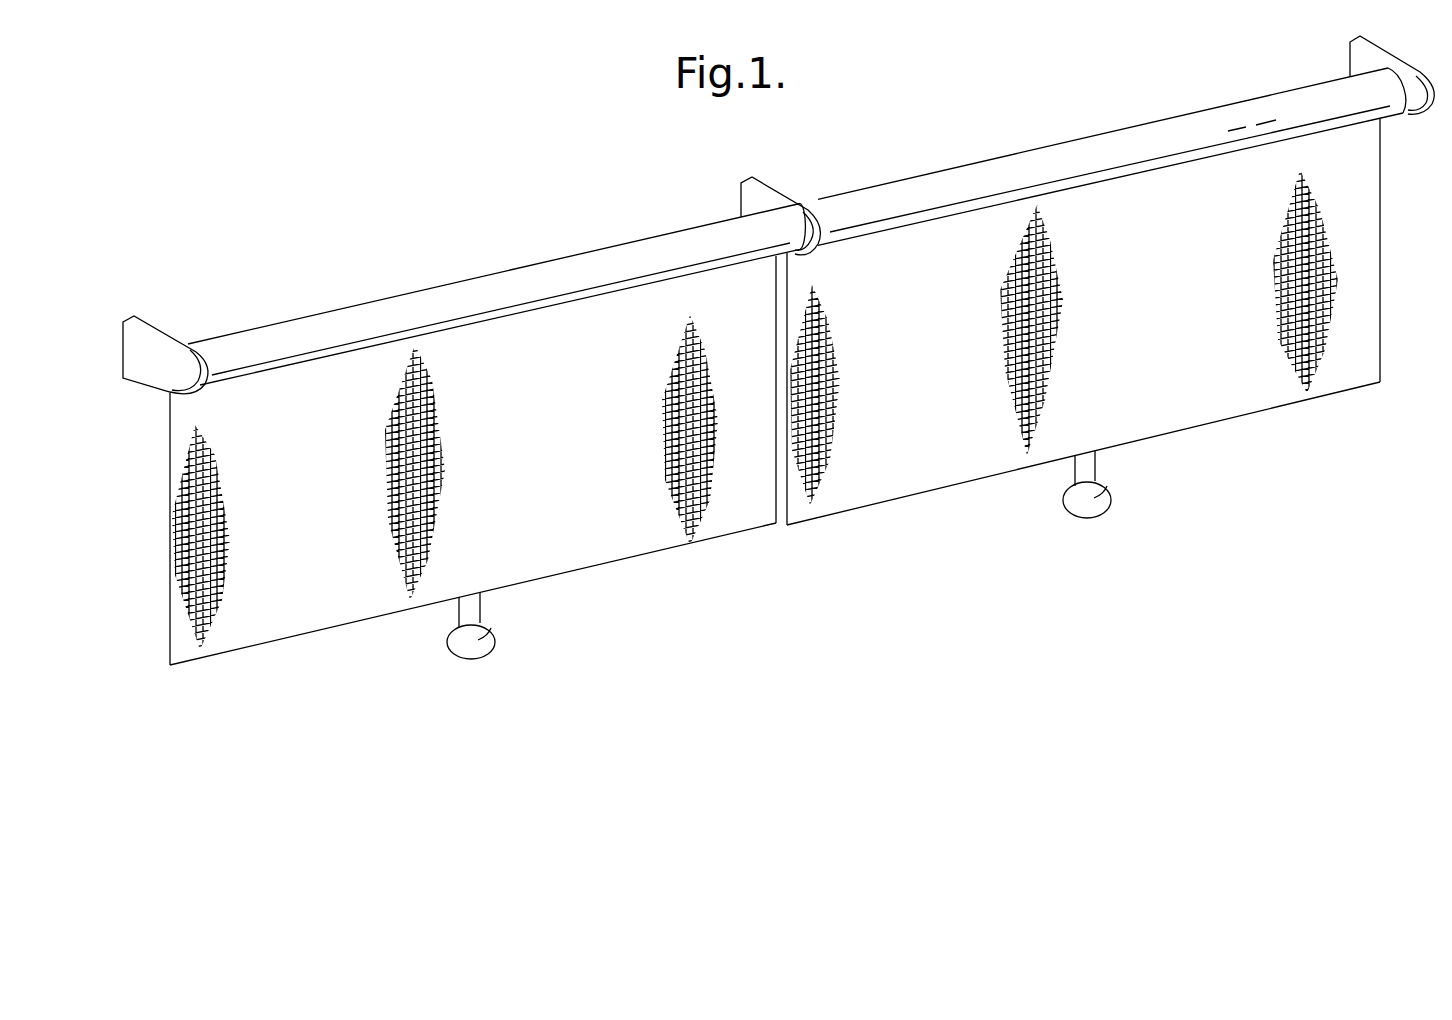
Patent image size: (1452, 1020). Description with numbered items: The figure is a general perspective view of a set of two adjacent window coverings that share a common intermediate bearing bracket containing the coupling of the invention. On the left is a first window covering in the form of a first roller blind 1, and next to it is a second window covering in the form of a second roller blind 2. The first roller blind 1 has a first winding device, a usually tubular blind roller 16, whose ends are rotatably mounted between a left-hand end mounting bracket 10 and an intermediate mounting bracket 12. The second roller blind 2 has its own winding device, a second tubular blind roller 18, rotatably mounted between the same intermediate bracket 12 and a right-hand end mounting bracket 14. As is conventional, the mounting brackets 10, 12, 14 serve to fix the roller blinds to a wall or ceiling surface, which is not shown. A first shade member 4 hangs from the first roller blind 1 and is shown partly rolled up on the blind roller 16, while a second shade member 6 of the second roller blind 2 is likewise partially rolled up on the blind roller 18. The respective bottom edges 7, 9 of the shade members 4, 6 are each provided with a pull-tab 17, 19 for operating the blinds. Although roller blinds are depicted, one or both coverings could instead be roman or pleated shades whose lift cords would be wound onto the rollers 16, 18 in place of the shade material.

The first roller blind 1 is at (146, 456).
The second roller blind 2 is at (1398, 258).
The first shade member 4 is at (190, 581).
The second shade member 6 is at (1352, 357).
The bottom edge 7 is at (330, 628).
The bottom edge 9 is at (960, 488).
The left-hand end mounting bracket 10 is at (158, 330).
The intermediate mounting bracket 12 is at (747, 196).
The right-hand end mounting bracket 14 is at (1365, 64).
The first blind roller 16 is at (442, 297).
The pull-tab 17 is at (494, 630).
The second blind roller 18 is at (1072, 157).
The pull-tab 19 is at (1110, 490).